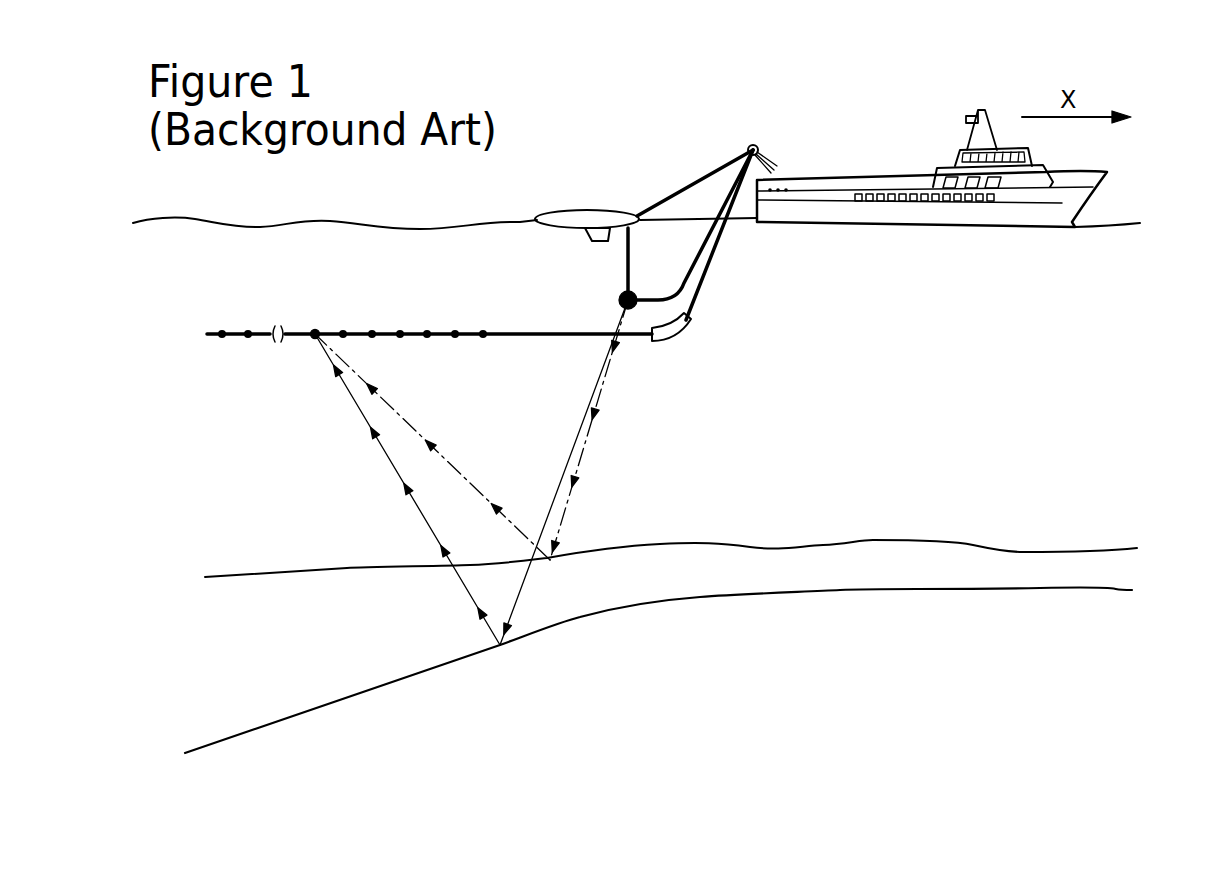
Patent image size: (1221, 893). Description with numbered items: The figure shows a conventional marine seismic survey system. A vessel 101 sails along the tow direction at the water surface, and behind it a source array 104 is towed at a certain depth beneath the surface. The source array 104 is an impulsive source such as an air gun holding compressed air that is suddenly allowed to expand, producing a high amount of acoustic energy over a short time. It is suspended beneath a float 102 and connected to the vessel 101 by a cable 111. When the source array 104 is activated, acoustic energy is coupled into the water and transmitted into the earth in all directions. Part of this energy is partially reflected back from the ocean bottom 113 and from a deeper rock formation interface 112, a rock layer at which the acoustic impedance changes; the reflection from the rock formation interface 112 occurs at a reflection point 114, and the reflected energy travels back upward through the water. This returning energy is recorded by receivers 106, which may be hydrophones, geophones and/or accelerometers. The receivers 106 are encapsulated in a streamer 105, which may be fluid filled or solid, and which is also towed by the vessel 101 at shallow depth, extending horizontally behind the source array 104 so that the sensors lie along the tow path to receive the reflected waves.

The vessel 101 is at (1100, 177).
The float / buoy 102 is at (580, 210).
The source array 104 is at (620, 296).
The streamer 105 is at (240, 334).
The receiver 106 is at (315, 334).
The lead-in cable 111 is at (697, 256).
The rock formation interface 112 is at (893, 590).
The ocean bottom 113 is at (873, 540).
The reflection point 114 is at (505, 645).